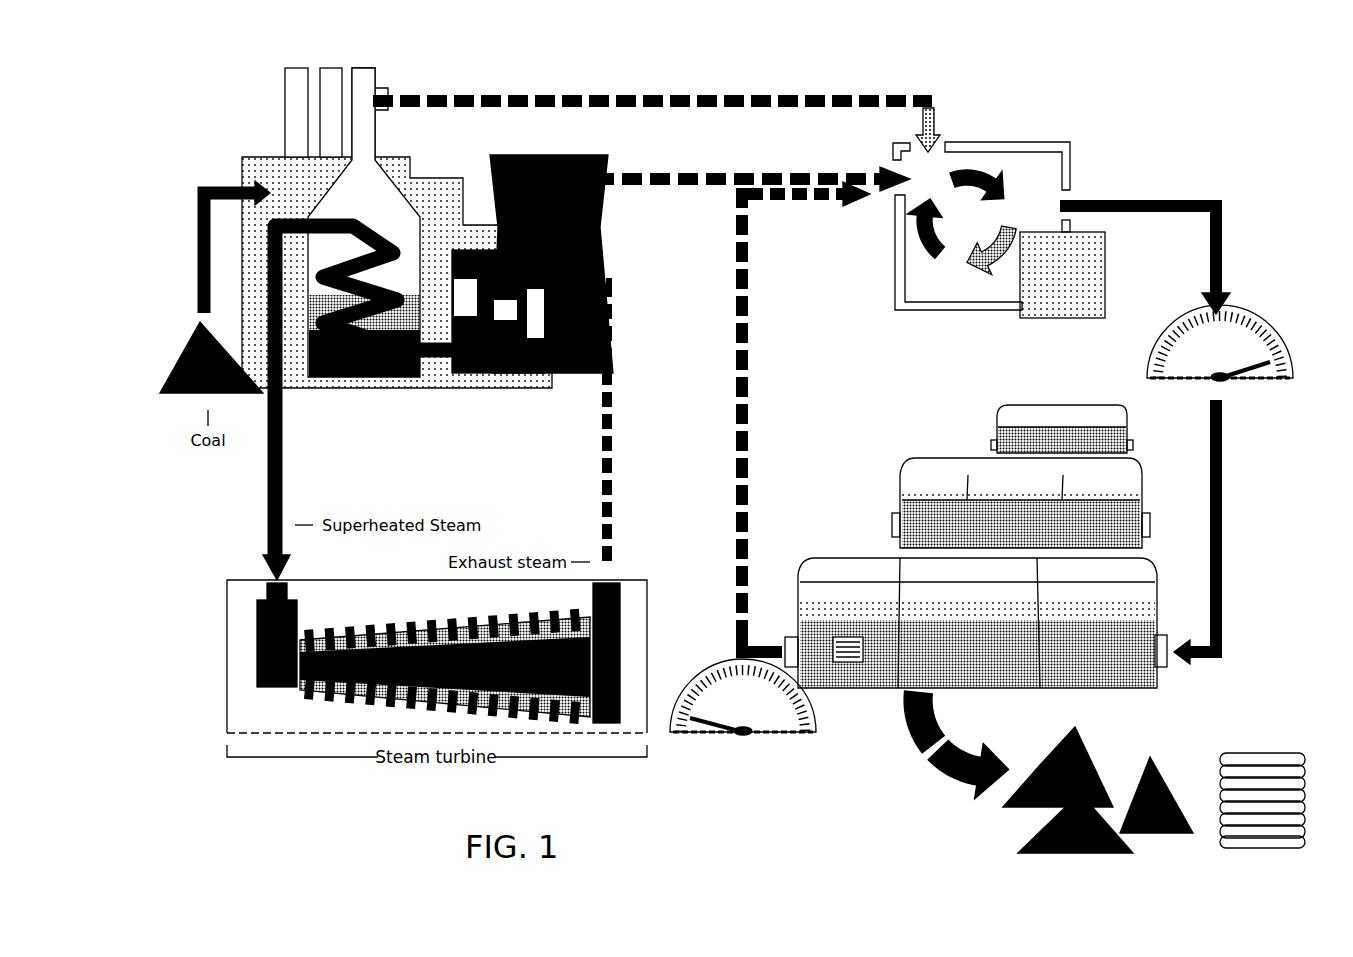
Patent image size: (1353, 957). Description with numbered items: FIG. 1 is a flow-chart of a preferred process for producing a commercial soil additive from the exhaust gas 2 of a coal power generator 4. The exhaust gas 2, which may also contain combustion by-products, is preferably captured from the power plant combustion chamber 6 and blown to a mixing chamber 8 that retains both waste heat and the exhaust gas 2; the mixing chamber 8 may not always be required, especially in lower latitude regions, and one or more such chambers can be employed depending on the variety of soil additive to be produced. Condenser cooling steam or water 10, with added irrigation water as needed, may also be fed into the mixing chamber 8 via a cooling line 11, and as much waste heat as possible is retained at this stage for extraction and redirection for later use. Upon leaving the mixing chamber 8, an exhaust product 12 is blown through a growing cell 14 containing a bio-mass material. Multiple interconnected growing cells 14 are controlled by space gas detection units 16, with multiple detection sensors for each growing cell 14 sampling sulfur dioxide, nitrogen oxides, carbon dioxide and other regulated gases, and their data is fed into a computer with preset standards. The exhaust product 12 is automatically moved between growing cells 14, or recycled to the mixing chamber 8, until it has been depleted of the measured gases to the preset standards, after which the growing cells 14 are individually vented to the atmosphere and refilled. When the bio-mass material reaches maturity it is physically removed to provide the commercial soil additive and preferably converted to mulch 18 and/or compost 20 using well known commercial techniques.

The exhaust gas 2 is at (673, 107).
The coal power generator 4 is at (260, 148).
The power plant combustion chamber 6 is at (360, 395).
The mixing chamber 8 is at (1075, 131).
The condenser cooling steam or water 10 is at (527, 373).
The cooling line 11 is at (679, 192).
The exhaust product 12 is at (1158, 197).
The growing cell 14 is at (860, 539).
The space gas detection unit 16 is at (1267, 329).
The mulch 18 is at (1115, 757).
The compost 20 is at (1262, 749).